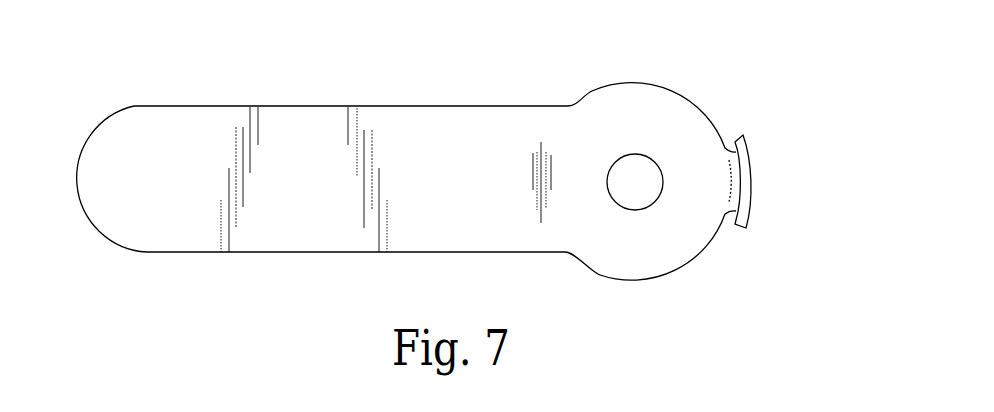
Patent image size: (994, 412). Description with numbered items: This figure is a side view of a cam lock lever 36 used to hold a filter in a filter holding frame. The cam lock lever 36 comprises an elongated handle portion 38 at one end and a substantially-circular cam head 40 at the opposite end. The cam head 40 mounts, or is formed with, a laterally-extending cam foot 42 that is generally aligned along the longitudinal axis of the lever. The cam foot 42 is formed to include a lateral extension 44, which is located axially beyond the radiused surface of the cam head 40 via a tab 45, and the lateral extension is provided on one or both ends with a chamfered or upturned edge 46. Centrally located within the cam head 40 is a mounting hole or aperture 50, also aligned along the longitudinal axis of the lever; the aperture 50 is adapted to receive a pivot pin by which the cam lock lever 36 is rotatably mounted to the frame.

The cam lock lever 36 is at (204, 276).
The elongated handle portion 38 is at (211, 132).
The cam head 40 is at (677, 117).
The cam foot 42 is at (766, 152).
The lateral extension 44 is at (747, 200).
The tab 45 is at (738, 180).
The chamfered or upturned edge 46 is at (746, 227).
The mounting hole or aperture 50 is at (618, 188).